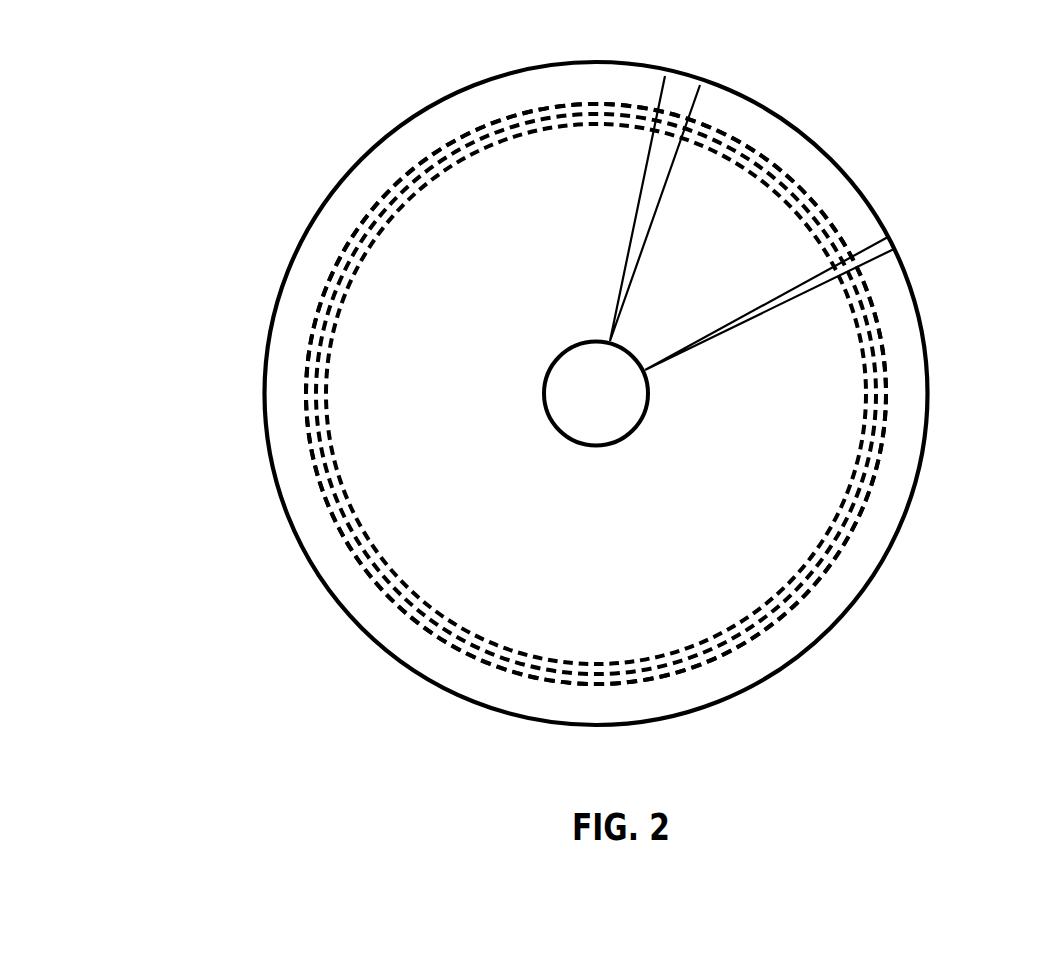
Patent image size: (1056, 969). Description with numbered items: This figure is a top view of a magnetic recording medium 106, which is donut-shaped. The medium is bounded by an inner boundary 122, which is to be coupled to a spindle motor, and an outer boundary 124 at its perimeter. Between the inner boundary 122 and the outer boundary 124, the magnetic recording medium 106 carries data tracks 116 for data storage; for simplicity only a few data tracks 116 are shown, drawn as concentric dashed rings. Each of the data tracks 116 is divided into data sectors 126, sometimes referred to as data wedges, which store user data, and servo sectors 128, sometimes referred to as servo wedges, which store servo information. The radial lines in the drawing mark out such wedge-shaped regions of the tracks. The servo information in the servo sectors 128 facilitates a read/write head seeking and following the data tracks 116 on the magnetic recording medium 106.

The magnetic recording medium 106 is at (176, 140).
The data tracks 116 is at (878, 462).
The inner boundary 122 is at (597, 446).
The outer boundary 124 is at (802, 657).
The data sectors 126 is at (772, 163).
The servo sectors 128 is at (858, 260).